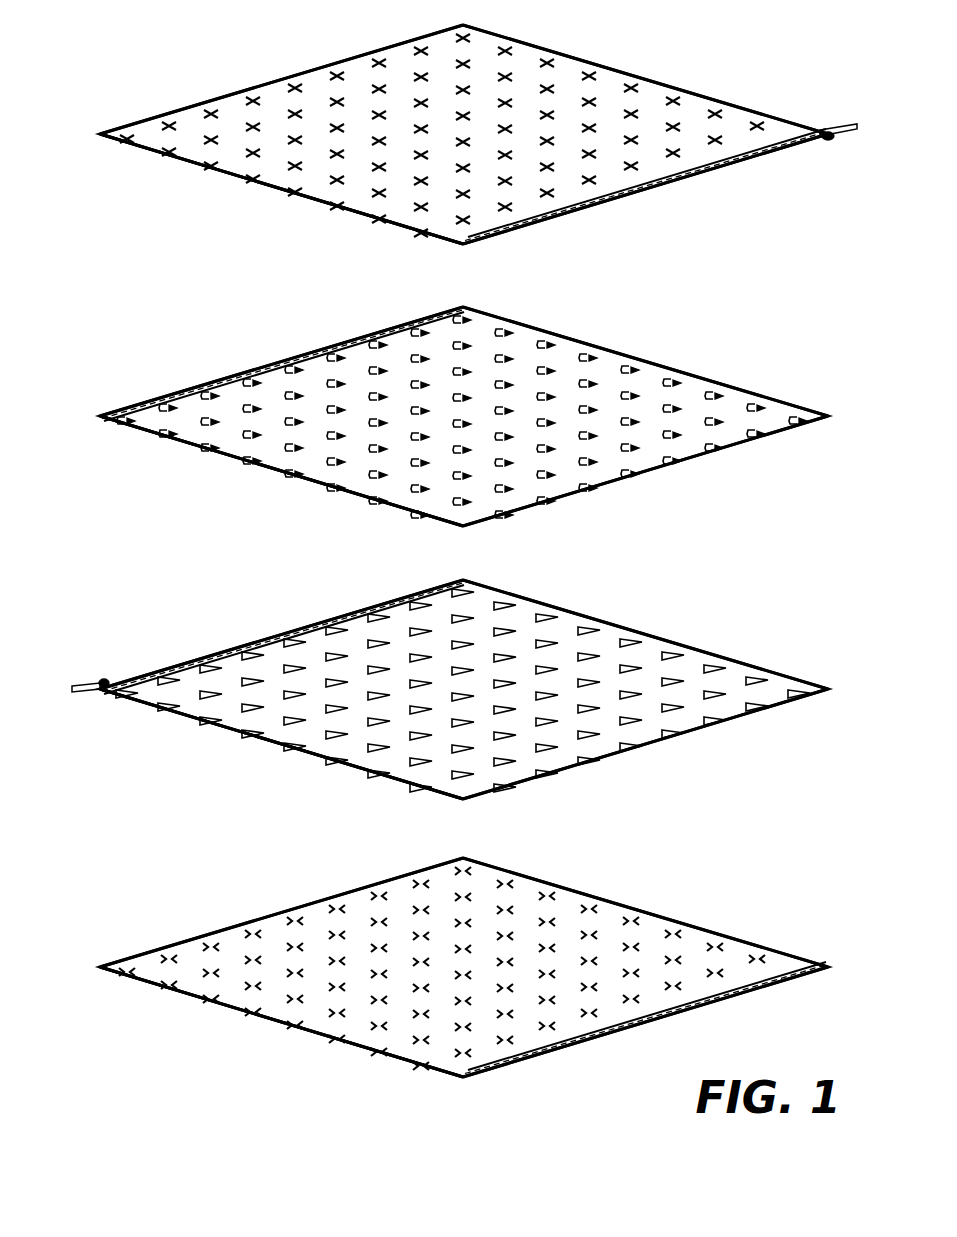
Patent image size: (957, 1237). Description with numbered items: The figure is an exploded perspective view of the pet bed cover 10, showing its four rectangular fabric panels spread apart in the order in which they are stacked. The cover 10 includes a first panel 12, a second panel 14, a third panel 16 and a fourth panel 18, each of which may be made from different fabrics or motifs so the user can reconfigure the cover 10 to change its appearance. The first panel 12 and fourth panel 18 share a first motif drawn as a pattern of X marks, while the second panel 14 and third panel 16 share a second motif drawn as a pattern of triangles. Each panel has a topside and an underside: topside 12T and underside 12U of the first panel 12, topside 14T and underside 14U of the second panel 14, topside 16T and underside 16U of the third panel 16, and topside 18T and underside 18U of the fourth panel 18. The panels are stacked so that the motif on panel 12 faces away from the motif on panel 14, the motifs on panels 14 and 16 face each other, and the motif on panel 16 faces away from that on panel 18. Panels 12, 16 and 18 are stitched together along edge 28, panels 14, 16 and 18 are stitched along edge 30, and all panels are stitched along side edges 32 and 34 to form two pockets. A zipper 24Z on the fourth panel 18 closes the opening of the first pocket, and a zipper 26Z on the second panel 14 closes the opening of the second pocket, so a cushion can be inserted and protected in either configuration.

The cover 10 is at (148, 303).
The first panel 12 is at (652, 958).
The topside of first panel 12T is at (312, 1035).
The underside of first panel 12U is at (195, 963).
The second panel 14 is at (652, 682).
The topside of second panel 14T is at (283, 660).
The underside of second panel 14U is at (243, 733).
The third panel 16 is at (650, 408).
The topside of third panel 16T is at (228, 460).
The underside of third panel 16U is at (197, 412).
The fourth panel 18 is at (650, 128).
The topside of fourth panel 18T is at (273, 110).
The underside of fourth panel 18U is at (192, 165).
The zipper 24Z is at (833, 134).
The zipper 26Z is at (98, 685).
The edge 28 is at (357, 58).
The edge 30 is at (635, 197).
The side edge 32 is at (280, 195).
The side edge 34 is at (613, 68).